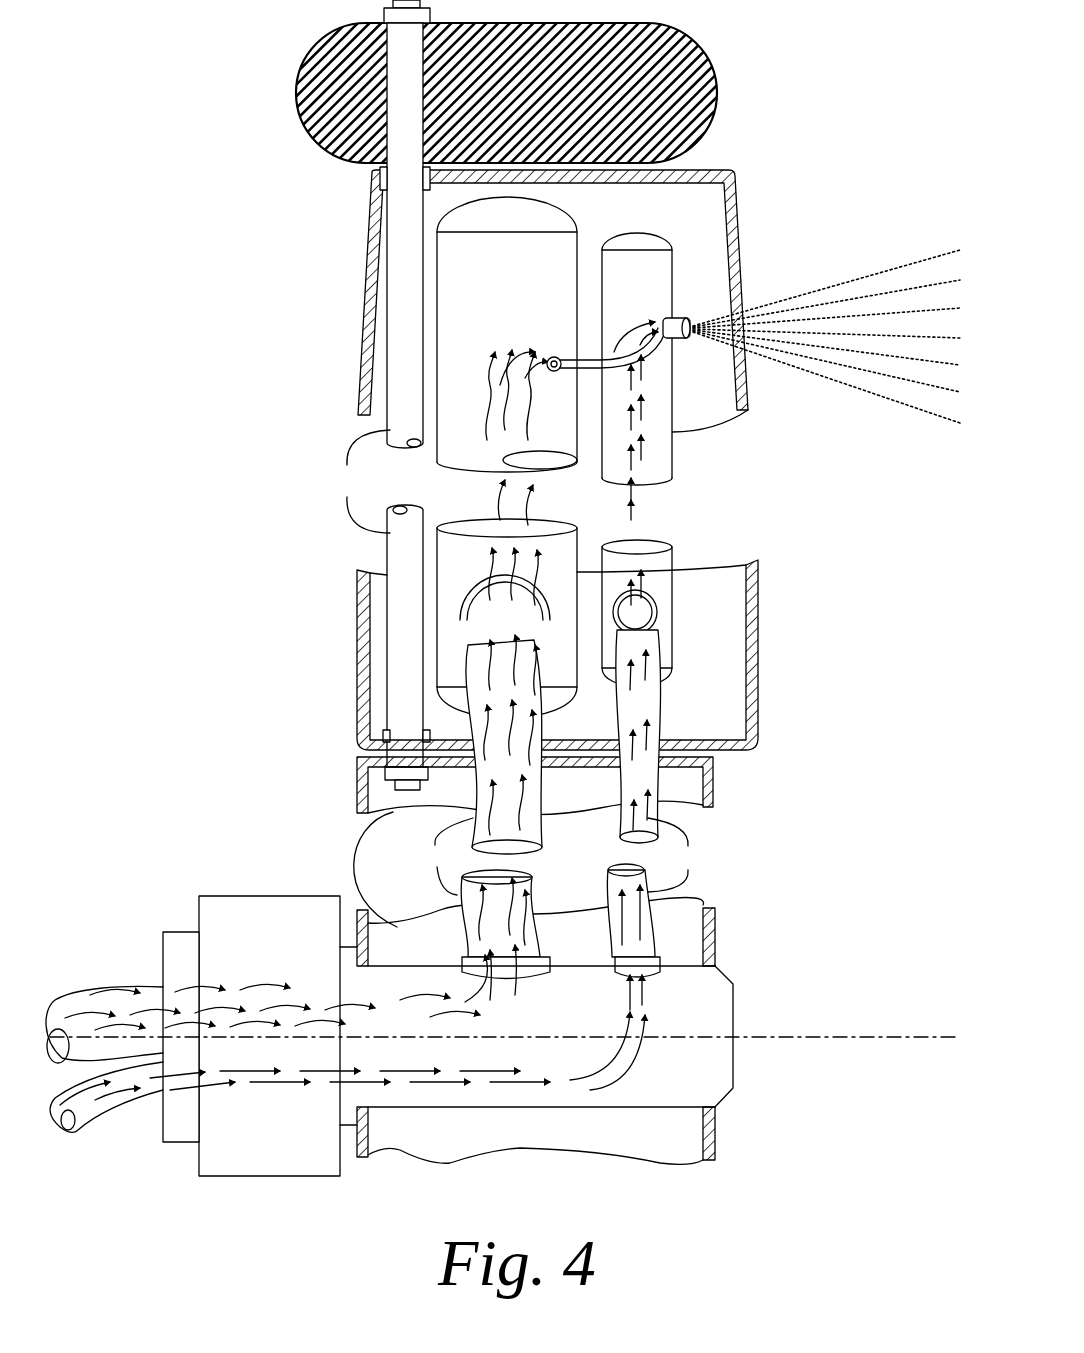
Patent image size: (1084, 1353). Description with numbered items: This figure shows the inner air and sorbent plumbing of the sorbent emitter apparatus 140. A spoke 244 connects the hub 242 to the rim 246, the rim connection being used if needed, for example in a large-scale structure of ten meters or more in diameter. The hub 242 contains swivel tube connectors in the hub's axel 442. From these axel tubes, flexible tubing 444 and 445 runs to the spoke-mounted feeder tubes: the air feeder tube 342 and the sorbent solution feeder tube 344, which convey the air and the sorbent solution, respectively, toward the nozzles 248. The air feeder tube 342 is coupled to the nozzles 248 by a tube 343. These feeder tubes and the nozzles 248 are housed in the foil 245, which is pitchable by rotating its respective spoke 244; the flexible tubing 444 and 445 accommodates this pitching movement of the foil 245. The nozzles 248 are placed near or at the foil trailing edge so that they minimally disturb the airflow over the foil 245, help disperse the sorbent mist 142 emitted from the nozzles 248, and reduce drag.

The sorbent emitter apparatus 140 is at (797, 115).
The sorbent mist 142 is at (959, 334).
The hub 242 is at (549, 743).
The spoke 244 is at (380, 395).
The foil 245 is at (706, 216).
The rim 246 is at (300, 100).
The nozzles 248 is at (683, 318).
The air feeder tube 342 is at (524, 287).
The tube 343 is at (587, 372).
The sorbent solution feeder tube 344 is at (654, 287).
The axel 442 is at (706, 1023).
The flexible tubing 444 is at (482, 817).
The flexible tubing 445 is at (640, 860).